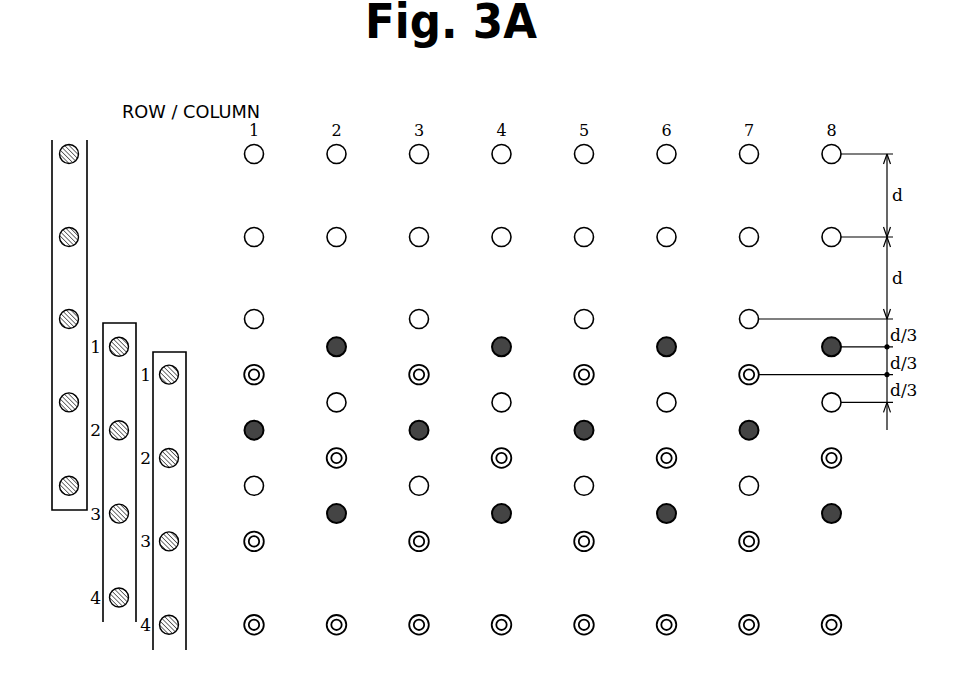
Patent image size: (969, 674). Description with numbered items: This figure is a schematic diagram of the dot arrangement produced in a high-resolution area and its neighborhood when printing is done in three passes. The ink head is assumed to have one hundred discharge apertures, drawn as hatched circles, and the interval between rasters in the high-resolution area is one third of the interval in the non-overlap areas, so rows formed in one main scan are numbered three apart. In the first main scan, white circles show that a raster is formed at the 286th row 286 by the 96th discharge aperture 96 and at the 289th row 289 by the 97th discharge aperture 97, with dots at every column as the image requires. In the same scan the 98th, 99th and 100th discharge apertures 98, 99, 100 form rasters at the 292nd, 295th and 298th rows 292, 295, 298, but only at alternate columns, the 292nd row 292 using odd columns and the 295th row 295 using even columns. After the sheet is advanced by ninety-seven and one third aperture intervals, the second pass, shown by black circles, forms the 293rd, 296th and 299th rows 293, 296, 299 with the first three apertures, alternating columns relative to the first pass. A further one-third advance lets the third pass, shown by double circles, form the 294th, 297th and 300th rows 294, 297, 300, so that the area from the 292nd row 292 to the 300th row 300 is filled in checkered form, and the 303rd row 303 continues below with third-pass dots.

The 286th row 286 is at (521, 154).
The 289th row 289 is at (521, 237).
The 292nd row 292 is at (480, 319).
The 293rd row 293 is at (521, 347).
The 294th row 294 is at (480, 375).
The 295th row 295 is at (521, 402).
The 296th row 296 is at (480, 430).
The 297th row 297 is at (522, 458).
The 298th row 298 is at (480, 486).
The 299th row 299 is at (521, 514).
The 300th row 300 is at (480, 541).
The 303rd row 303 is at (522, 625).
The 96th discharge aperture 96 is at (53, 154).
The 97th discharge aperture 97 is at (53, 237).
The 98th discharge aperture 98 is at (53, 319).
The 99th discharge aperture 99 is at (53, 402).
The 100th discharge aperture 100 is at (48, 486).